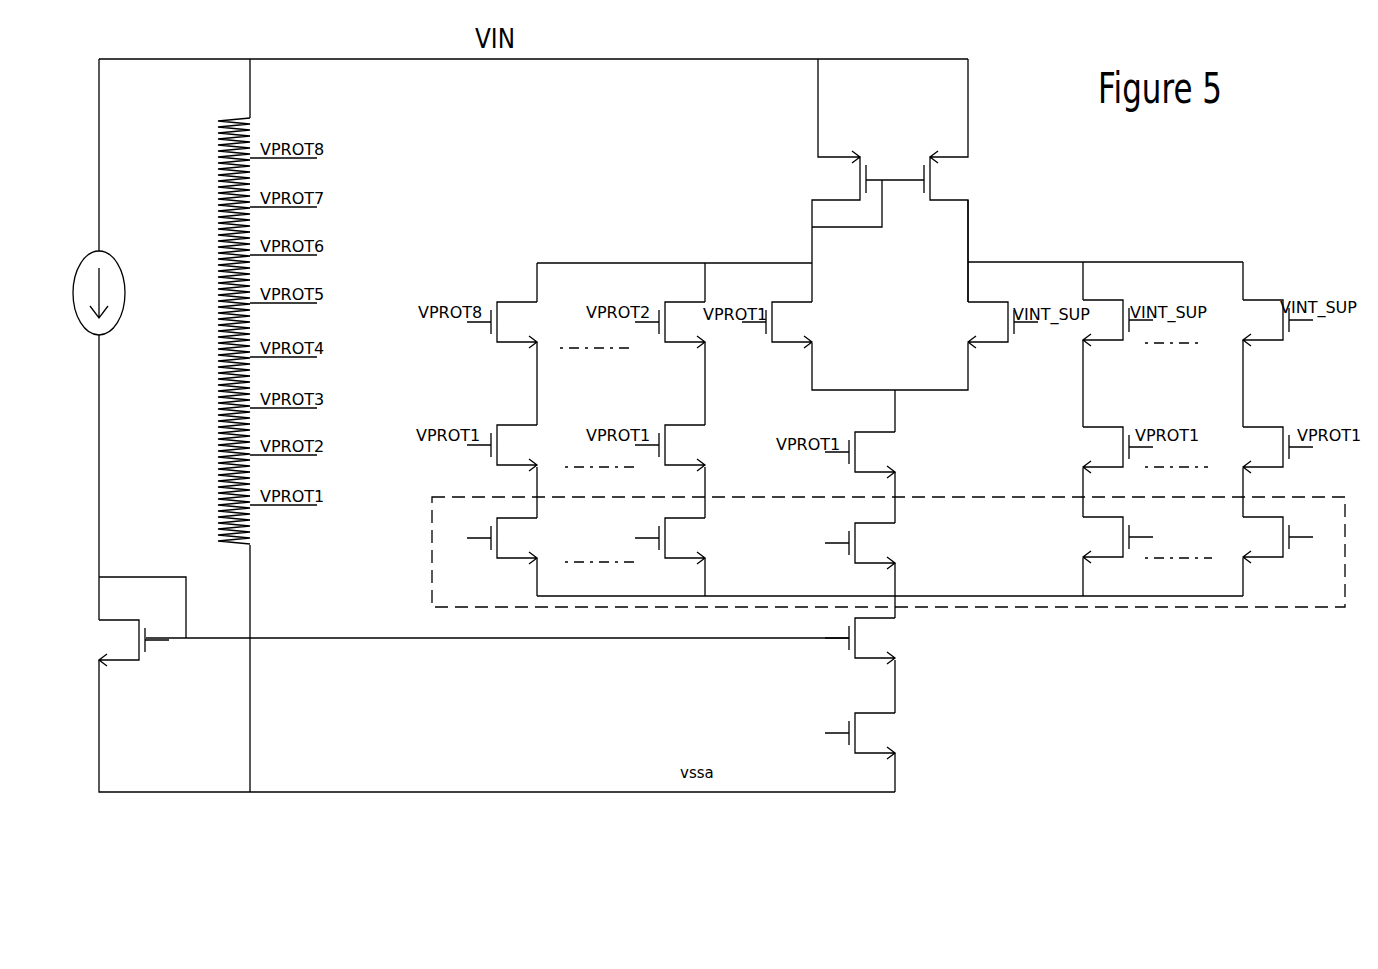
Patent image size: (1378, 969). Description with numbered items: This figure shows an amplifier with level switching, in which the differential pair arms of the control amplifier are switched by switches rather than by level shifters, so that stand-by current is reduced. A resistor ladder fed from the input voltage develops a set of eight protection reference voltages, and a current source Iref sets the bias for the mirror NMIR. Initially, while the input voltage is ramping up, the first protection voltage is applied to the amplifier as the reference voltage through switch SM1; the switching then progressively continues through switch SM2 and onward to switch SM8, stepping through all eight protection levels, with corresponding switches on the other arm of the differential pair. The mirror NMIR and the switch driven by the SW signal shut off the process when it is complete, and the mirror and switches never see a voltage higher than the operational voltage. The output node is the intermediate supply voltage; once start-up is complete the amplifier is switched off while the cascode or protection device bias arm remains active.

The reference current source Iref is at (119, 293).
The switch SM1 is at (873, 543).
The switch SM2 is at (1108, 540).
The switch SM8 is at (1267, 540).
The mirror NMIR is at (840, 641).